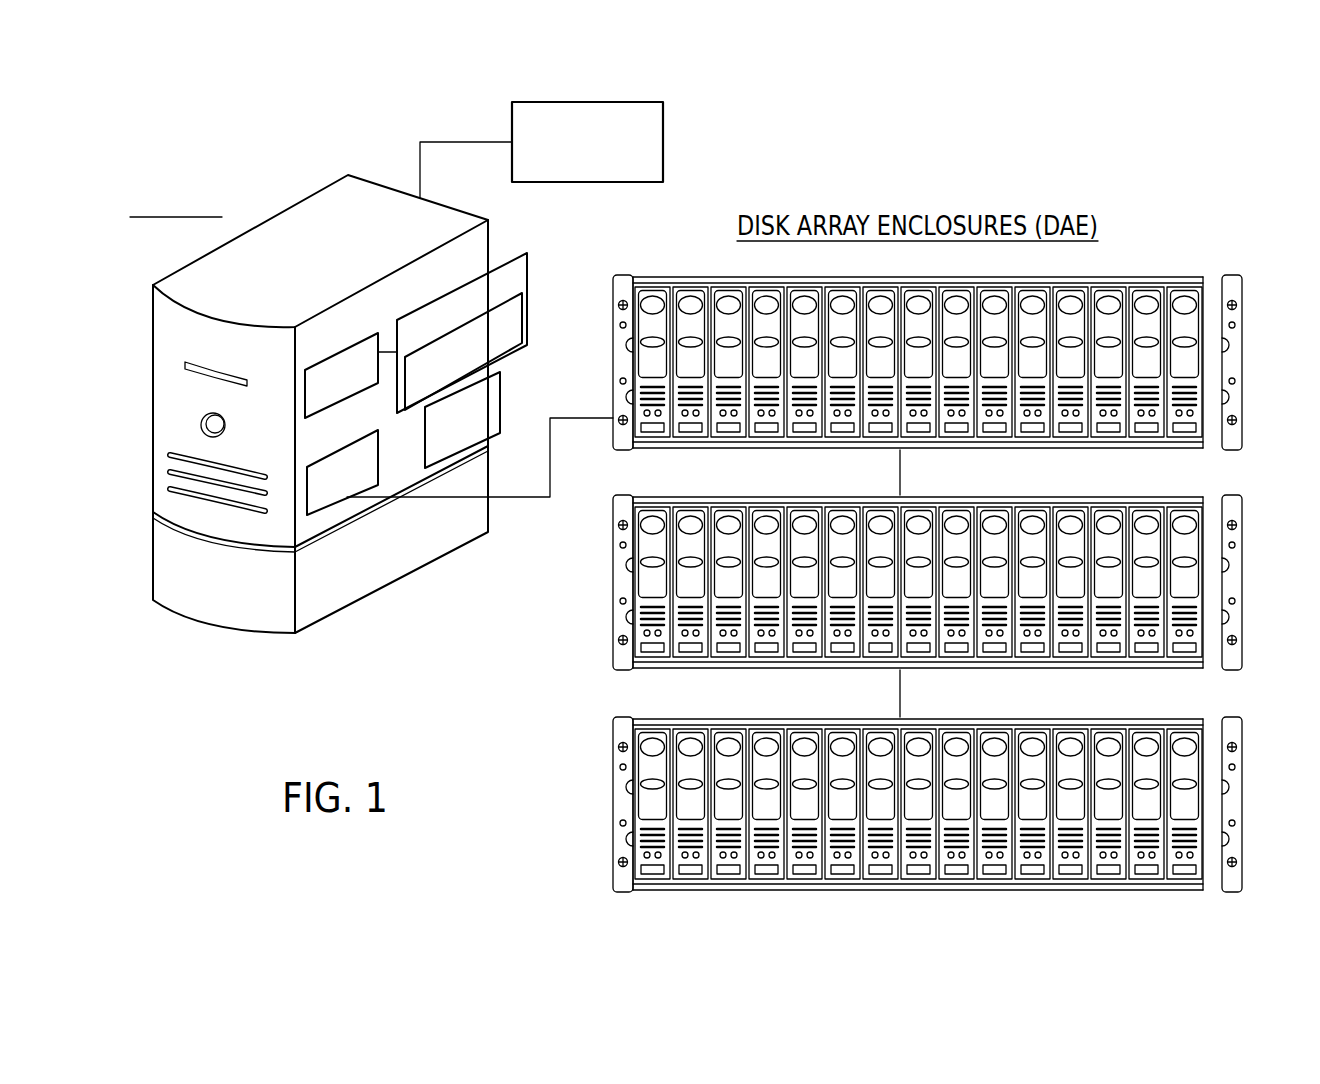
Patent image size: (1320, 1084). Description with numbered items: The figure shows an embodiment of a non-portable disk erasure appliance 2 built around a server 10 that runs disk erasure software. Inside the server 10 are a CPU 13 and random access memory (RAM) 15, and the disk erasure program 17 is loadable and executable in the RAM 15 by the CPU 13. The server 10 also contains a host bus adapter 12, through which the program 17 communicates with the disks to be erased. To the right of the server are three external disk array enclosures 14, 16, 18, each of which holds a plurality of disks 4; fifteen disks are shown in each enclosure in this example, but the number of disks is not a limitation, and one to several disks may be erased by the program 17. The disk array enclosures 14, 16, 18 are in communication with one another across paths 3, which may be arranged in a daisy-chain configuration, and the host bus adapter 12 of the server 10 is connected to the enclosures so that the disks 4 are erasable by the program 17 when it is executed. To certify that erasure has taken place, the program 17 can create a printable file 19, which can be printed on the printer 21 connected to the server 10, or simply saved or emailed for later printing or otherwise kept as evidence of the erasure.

The non-portable disk erasure appliance 2 is at (1168, 201).
The paths 3 is at (900, 470).
The disks 4 is at (636, 287).
The server 10 is at (313, 215).
The host bus adapter 12 is at (338, 497).
The CPU 13 is at (372, 335).
The external disk array enclosure 14 is at (1222, 368).
The random access memory (RAM) 15 is at (516, 278).
The external disk array enclosure 16 is at (1222, 588).
The program 17 is at (527, 310).
The external disk array enclosure 18 is at (1222, 808).
The printable file 19 is at (500, 393).
The printer 21 is at (663, 141).